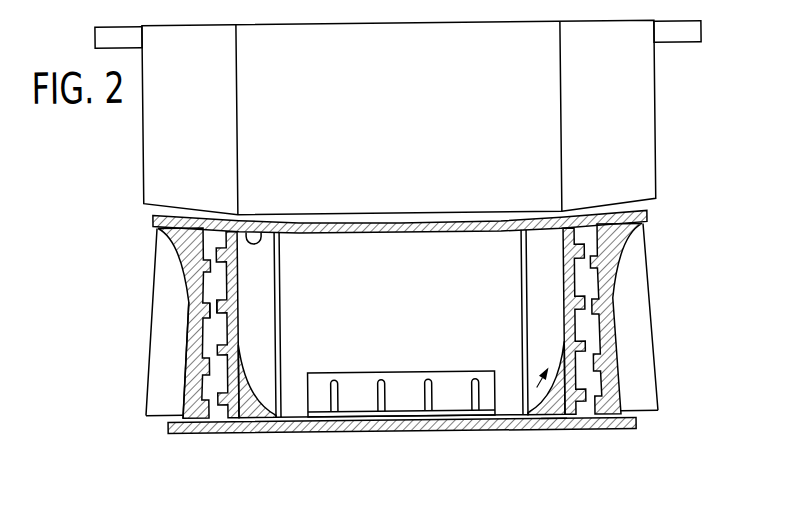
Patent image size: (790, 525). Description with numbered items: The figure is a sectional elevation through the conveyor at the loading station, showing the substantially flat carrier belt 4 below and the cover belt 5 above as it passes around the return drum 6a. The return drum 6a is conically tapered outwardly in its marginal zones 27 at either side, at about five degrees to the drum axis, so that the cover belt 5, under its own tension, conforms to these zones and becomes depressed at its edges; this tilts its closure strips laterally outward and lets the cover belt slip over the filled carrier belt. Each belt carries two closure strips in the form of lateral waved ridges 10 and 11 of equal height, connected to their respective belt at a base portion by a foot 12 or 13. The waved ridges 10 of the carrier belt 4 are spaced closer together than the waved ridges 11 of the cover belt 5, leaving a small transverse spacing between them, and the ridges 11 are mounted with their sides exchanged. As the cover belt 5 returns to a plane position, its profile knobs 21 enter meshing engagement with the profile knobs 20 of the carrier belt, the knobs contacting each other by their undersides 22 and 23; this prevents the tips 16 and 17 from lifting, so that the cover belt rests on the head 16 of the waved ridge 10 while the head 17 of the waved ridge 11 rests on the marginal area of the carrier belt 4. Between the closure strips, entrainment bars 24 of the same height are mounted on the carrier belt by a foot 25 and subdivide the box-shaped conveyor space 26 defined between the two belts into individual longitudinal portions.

The carrier belt 4 is at (583, 439).
The cover belt 5 is at (661, 212).
The return drum 6a is at (418, 86).
The waved ridge 10 is at (527, 428).
The waved ridge 11 is at (145, 411).
The foot 12 is at (553, 432).
The foot 13 is at (644, 231).
The head 16 is at (271, 229).
The head 17 is at (156, 414).
The profile knob 20 is at (220, 310).
The profile knob 21 is at (186, 379).
The underside 22 is at (219, 405).
The underside 23 is at (190, 293).
The entrainment bar 24 is at (370, 345).
The foot 25 is at (442, 395).
The conveyor space 26 is at (328, 346).
The marginal zone 27 is at (157, 123).